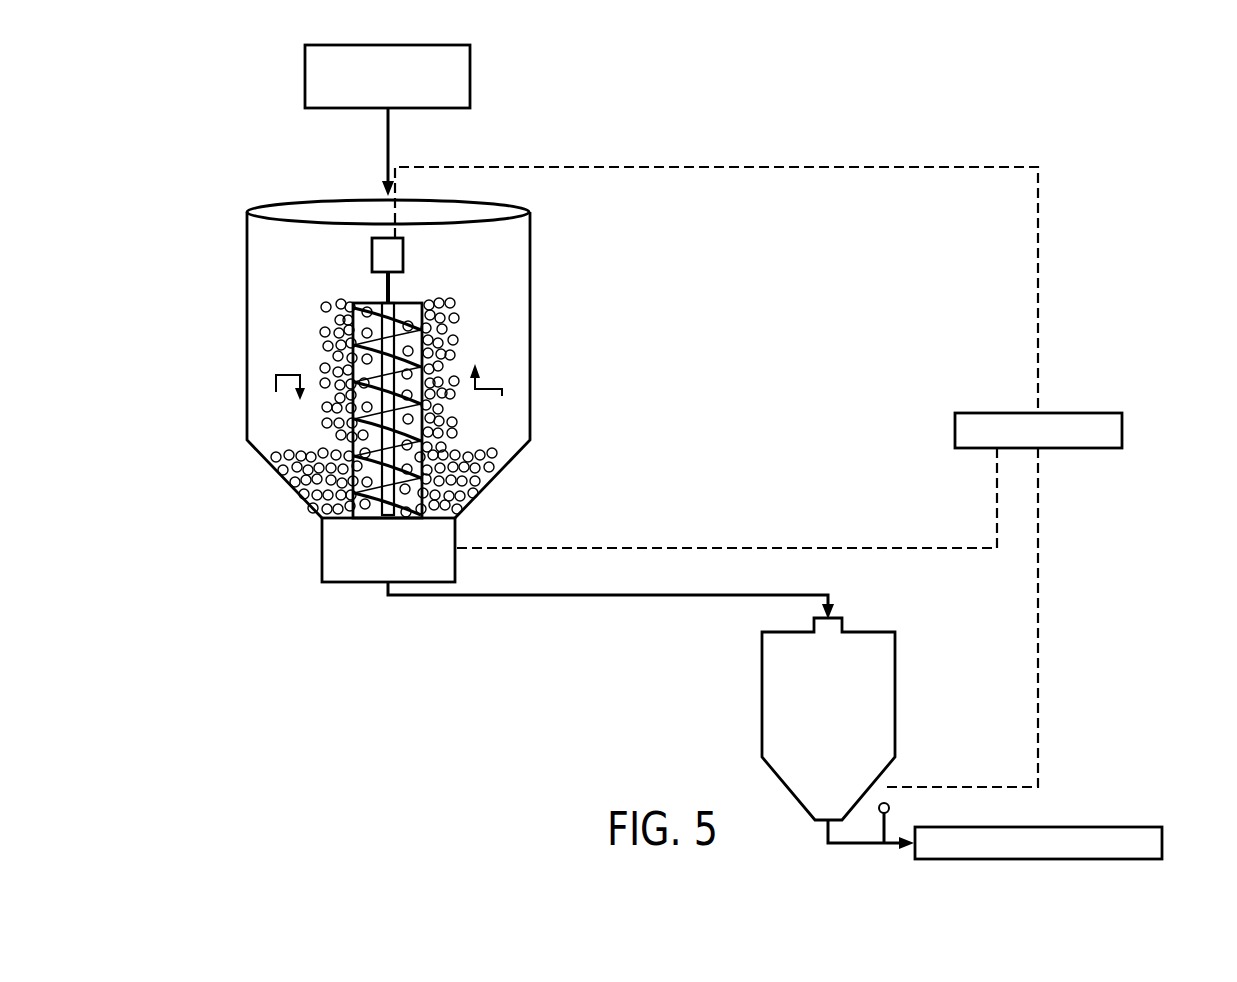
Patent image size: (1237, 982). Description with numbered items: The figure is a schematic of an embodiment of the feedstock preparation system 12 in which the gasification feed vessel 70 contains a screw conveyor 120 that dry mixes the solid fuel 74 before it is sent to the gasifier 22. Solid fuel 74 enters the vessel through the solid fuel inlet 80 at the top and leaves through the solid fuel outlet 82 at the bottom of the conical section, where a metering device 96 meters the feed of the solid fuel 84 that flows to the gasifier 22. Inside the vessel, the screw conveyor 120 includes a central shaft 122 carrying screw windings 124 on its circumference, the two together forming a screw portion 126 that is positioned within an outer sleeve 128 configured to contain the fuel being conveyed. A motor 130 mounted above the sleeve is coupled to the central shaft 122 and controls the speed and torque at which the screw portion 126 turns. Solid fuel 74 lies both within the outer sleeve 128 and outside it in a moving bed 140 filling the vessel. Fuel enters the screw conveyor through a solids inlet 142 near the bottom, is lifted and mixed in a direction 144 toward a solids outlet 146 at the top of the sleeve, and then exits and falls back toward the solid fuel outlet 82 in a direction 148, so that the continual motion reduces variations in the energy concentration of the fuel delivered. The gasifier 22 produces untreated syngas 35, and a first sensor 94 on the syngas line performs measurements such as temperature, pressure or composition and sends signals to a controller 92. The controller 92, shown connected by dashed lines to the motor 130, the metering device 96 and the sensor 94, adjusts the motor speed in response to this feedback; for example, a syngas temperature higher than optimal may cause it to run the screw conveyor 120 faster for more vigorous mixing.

The feedstock preparation system 12 is at (1103, 142).
The gasifier 22 is at (762, 696).
The untreated syngas 35 is at (1162, 843).
The gasification feed vessel 70 is at (354, 345).
The solid fuel 74 is at (471, 76).
The solid fuel inlet 80 is at (285, 203).
The solid fuel outlet 82 is at (320, 517).
The feed of the solid fuel 84 is at (455, 596).
The controller 92 is at (1122, 430).
The first sensor 94 is at (890, 806).
The metering device 96 is at (322, 550).
The screw conveyor 120 is at (391, 373).
The central shaft 122 is at (426, 311).
The screw windings 124 is at (424, 357).
The screw portion 126 is at (400, 300).
The outer sleeve 128 is at (353, 336).
The motor 130 is at (372, 256).
The moving bed 140 is at (283, 446).
The solids inlet 142 is at (458, 516).
The direction 144 is at (498, 394).
The solids outlet 146 is at (366, 296).
The direction 148 is at (281, 395).